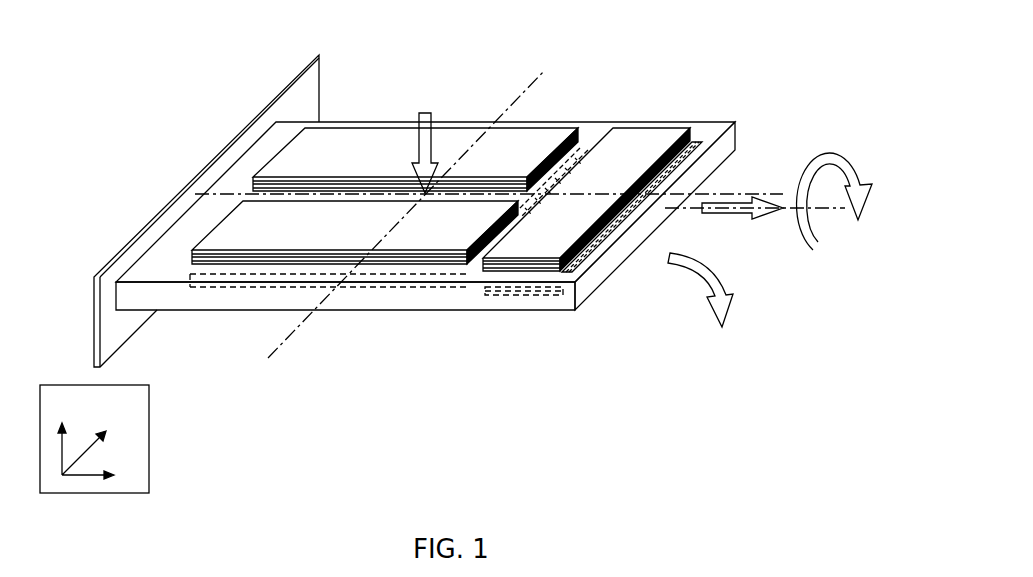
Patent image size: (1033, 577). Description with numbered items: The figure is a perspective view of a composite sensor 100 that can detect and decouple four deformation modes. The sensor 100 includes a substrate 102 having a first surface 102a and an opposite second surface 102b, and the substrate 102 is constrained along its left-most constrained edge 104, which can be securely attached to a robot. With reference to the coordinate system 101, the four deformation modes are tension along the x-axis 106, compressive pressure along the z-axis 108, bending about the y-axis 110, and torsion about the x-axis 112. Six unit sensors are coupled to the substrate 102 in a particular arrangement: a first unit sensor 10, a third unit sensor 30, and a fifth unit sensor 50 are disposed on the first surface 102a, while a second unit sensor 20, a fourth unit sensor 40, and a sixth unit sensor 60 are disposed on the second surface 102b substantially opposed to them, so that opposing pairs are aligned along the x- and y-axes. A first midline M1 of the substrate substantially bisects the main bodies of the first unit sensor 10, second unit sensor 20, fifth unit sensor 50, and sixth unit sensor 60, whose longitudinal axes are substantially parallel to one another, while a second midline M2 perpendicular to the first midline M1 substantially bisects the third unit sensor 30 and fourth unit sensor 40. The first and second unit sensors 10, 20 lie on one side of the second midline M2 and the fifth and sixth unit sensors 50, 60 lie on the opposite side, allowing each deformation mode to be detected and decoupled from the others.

The first unit sensor 10 is at (297, 158).
The second unit sensor 20 is at (580, 148).
The third unit sensor 30 is at (655, 142).
The fourth unit sensor 40 is at (592, 268).
The fifth unit sensor 50 is at (222, 242).
The sixth unit sensor 60 is at (185, 283).
The composite sensor 100 is at (704, 58).
The coordinate system 101 is at (82, 384).
The substrate 102 is at (449, 209).
The first surface 102a is at (704, 130).
The second surface 102b is at (540, 311).
The constrained edge 104 is at (118, 244).
The tension along the x-axis 106 is at (757, 220).
The compressive pressure along the z-axis 108 is at (418, 113).
The bending about the y-axis 110 is at (718, 274).
The torsion about the x-axis 112 is at (838, 152).
The first midline M1 is at (401, 231).
The second midline M2 is at (718, 192).